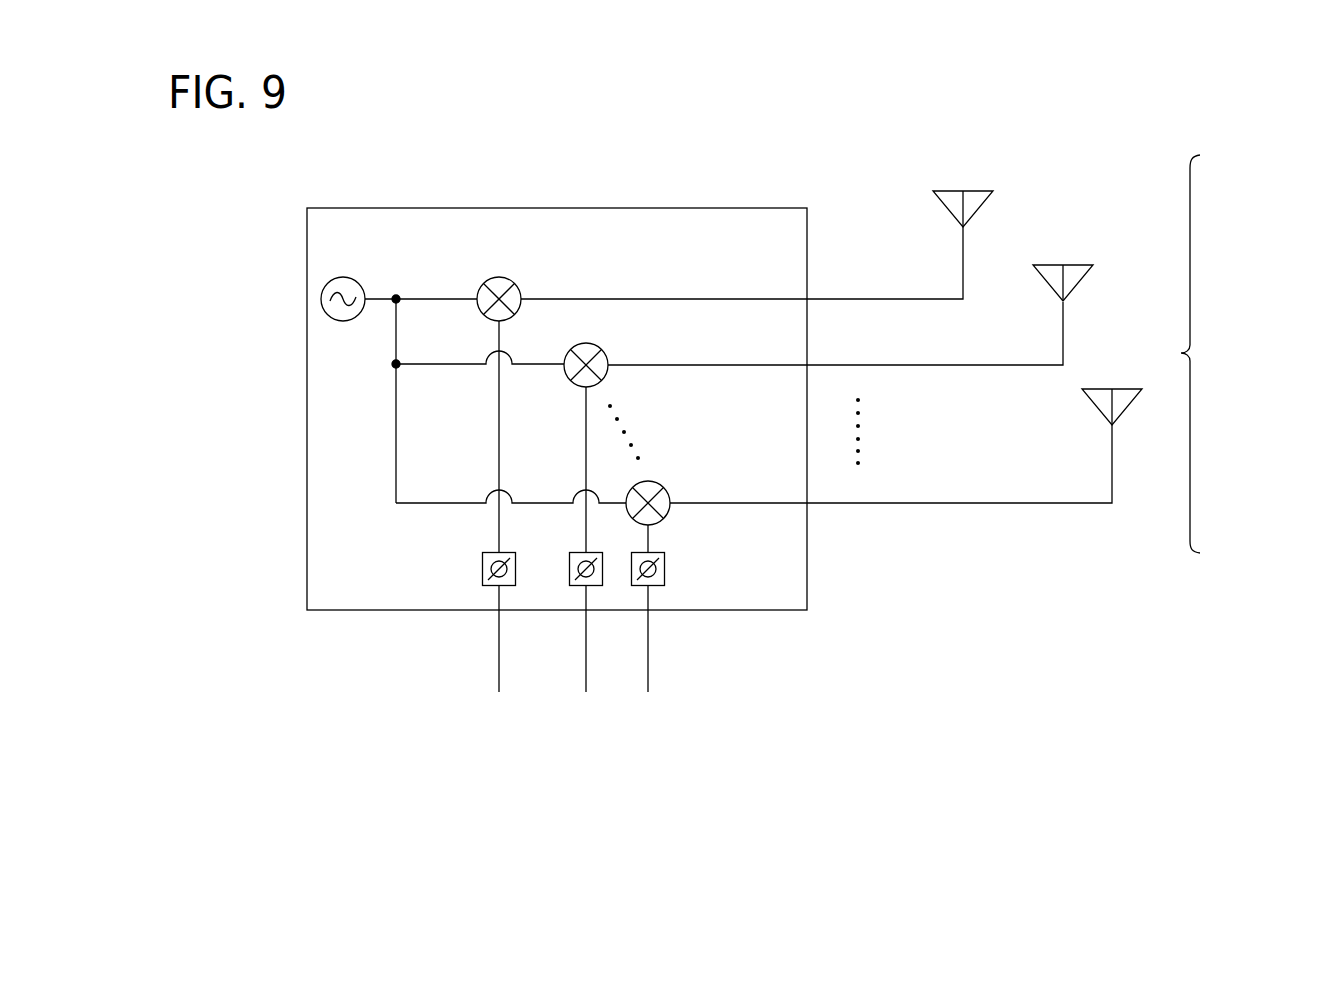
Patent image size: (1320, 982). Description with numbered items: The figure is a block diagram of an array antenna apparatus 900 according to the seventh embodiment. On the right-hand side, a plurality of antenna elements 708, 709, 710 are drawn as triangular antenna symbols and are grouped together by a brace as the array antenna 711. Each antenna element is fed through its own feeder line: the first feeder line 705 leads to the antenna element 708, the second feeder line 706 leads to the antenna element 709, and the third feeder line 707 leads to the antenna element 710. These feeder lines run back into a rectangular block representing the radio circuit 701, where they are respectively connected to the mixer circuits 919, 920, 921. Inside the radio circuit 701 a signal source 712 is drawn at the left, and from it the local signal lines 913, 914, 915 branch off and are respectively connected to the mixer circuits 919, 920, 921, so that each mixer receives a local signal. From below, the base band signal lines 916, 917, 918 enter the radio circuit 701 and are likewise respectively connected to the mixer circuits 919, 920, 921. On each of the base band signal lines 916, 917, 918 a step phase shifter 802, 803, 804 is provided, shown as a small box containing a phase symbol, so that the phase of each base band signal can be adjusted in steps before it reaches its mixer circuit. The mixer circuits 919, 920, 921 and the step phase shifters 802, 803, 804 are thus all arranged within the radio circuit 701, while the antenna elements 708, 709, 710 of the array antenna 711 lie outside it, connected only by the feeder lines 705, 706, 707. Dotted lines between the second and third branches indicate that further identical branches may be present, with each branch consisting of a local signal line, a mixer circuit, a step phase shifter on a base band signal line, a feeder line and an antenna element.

The array antenna apparatus 900 is at (763, 749).
The radio circuit 701 is at (612, 208).
The local oscillator signal source 712 is at (346, 277).
The local signal line 913 is at (424, 299).
The local signal line 914 is at (424, 364).
The local signal line 915 is at (424, 503).
The mixer circuit 919 is at (516, 285).
The mixer circuit 920 is at (604, 353).
The mixer circuit 921 is at (666, 491).
The step phase shifter 802 is at (482, 568).
The step phase shifter 803 is at (569, 564).
The step phase shifter 804 is at (665, 568).
The base band signal line 916 is at (498, 652).
The base band signal line 917 is at (585, 666).
The base band signal line 918 is at (650, 651).
The feeder line 705 is at (875, 299).
The feeder line 706 is at (918, 365).
The feeder line 707 is at (891, 503).
The antenna element 708 is at (976, 190).
The antenna element 709 is at (1076, 264).
The antenna element 710 is at (1123, 388).
The array antenna 711 is at (1196, 354).